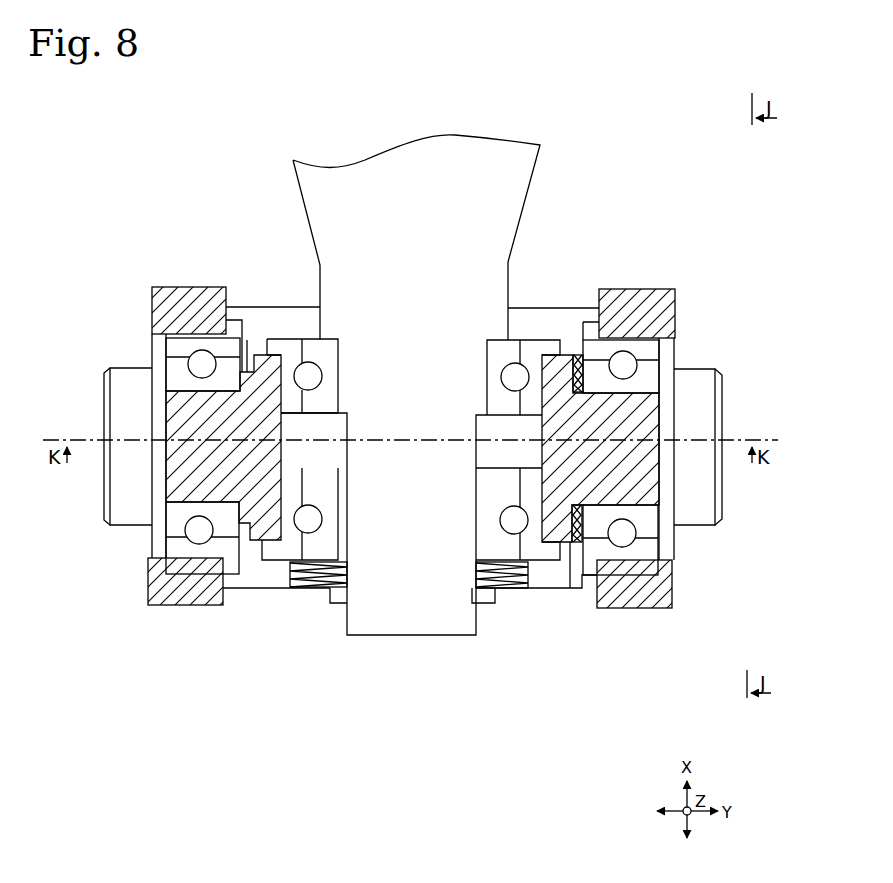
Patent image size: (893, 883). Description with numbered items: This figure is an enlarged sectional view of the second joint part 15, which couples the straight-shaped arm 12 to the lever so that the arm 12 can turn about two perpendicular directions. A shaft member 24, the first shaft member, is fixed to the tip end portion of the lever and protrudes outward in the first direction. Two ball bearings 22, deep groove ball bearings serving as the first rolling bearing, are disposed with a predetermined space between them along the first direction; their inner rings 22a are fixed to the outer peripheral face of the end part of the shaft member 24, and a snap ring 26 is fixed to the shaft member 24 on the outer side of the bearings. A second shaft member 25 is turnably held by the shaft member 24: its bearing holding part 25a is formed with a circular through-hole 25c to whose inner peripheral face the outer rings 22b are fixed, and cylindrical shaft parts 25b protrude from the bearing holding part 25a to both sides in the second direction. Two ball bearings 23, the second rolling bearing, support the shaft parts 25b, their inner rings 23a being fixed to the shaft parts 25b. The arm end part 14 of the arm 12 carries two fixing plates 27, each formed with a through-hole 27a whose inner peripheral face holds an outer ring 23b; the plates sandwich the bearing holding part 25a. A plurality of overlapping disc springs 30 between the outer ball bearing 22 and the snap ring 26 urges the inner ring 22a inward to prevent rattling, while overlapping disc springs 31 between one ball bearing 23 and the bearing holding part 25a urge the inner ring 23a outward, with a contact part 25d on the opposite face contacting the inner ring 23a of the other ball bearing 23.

The second joint part 15 is at (679, 199).
The arm 12 is at (637, 284).
The arm end part 14 is at (640, 289).
The shaft member 24 is at (528, 212).
The ball bearing 22 is at (567, 477).
The inner ring 22a is at (498, 338).
The outer ring 22b is at (538, 338).
The shaft member 25 is at (243, 381).
The bearing holding part 25a is at (256, 365).
The shaft part 25b is at (178, 385).
The through-hole 25c is at (294, 352).
The contact part 25d is at (244, 345).
The ball bearing 23 is at (417, 453).
The inner ring 23a is at (162, 535).
The outer ring 23b is at (417, 453).
The fixing plate 27 is at (413, 475).
The through-hole 27a is at (178, 557).
The disc spring 30 is at (290, 563).
The snap ring 26 is at (497, 603).
The disc spring 31 is at (572, 543).